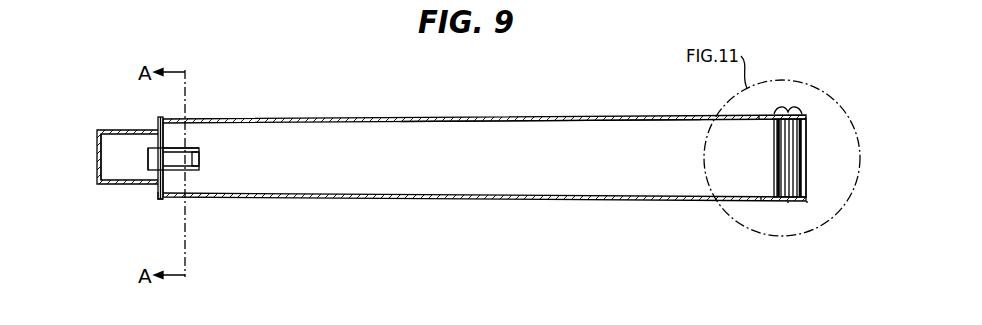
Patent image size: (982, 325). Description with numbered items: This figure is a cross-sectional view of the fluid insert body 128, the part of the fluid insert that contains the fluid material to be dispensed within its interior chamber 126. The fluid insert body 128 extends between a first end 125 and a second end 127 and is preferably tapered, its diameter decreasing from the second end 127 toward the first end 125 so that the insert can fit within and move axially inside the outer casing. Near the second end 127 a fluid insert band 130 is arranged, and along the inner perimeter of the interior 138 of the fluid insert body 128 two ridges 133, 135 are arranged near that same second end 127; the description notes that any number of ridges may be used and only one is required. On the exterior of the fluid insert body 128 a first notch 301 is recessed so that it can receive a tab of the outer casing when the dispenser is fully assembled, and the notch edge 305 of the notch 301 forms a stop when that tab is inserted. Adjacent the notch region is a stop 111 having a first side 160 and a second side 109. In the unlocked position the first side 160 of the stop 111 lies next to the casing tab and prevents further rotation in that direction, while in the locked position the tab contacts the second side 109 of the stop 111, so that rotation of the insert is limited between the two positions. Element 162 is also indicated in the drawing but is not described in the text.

The second side of the stop 109 is at (156, 192).
The stop 111 is at (148, 151).
The first end 125 is at (97, 152).
The interior chamber 126 is at (665, 140).
The second end 127 is at (806, 146).
The fluid insert body 128 is at (528, 100).
The fluid insert band 130 is at (758, 112).
The ridge 133 is at (786, 108).
The ridge 135 is at (787, 207).
The interior of the fluid insert body 138 is at (545, 119).
The first side of the stop 160 is at (153, 162).
The bolt head 162 is at (152, 146).
The first notch 301 is at (192, 146).
The notch edge 305 is at (199, 157).